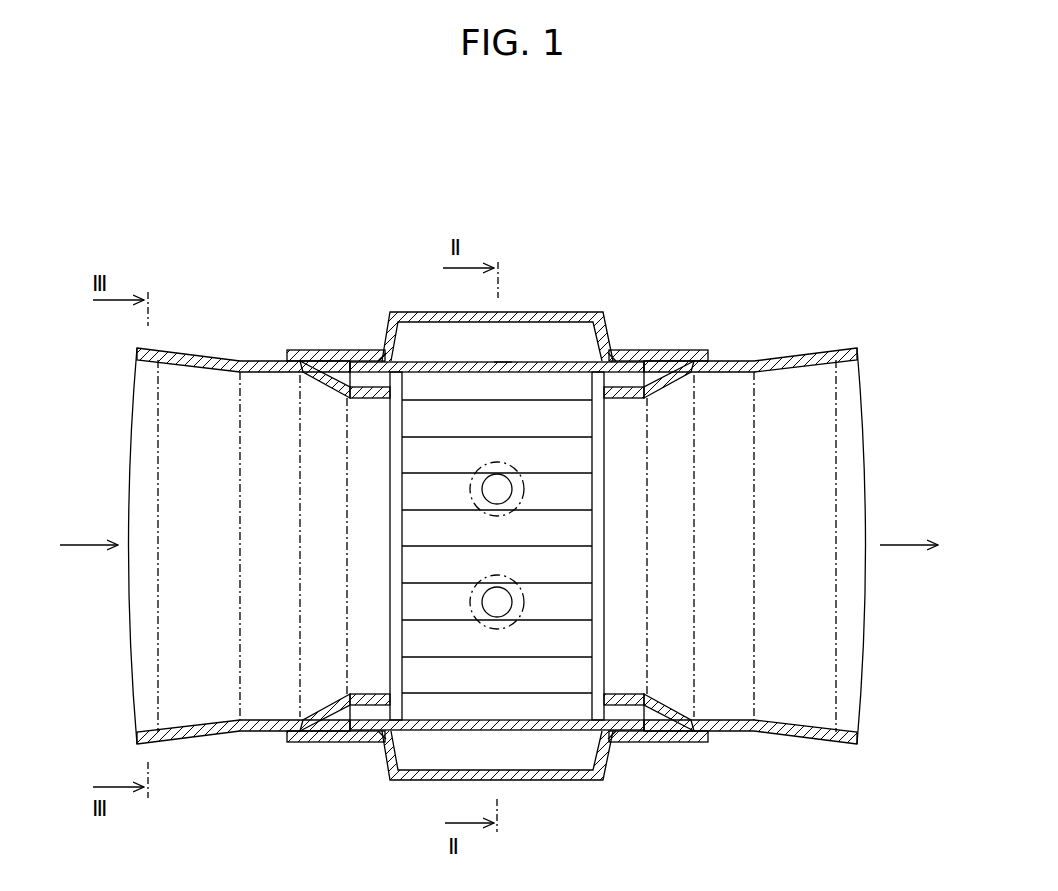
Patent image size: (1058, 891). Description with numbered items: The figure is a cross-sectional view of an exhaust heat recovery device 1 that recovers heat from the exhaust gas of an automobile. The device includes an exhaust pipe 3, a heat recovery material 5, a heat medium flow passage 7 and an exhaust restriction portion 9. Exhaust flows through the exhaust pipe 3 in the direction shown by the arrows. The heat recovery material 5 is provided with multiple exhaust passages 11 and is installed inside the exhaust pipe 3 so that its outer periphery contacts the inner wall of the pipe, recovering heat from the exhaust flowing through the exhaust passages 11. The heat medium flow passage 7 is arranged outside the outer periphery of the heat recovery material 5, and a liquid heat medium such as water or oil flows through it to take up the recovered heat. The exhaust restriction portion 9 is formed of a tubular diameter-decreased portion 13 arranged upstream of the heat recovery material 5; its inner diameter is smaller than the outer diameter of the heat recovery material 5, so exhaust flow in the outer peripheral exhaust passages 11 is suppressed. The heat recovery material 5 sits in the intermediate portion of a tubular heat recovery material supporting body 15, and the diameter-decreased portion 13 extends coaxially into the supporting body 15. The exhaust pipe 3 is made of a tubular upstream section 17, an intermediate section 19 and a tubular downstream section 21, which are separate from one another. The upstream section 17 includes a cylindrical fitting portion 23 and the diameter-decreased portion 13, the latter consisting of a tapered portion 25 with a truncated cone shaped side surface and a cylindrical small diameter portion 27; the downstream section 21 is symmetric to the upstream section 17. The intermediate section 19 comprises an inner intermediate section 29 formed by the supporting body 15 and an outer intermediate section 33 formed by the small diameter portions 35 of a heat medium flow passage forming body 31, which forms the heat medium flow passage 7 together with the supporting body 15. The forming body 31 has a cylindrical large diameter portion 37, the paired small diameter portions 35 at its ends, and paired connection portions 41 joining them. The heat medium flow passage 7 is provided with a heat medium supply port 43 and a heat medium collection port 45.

The exhaust heat recovery device 1 is at (622, 281).
The exhaust pipe 3 is at (344, 348).
The heat recovery material 5 is at (565, 693).
The heat medium flow passage 7 is at (545, 338).
The exhaust restriction portion 9 is at (358, 642).
The exhaust passages 11 is at (572, 457).
The diameter-decreased portion 13 is at (697, 362).
The heat recovery material supporting body 15 is at (428, 362).
The upstream section 17 is at (193, 349).
The intermediate section 19 is at (503, 357).
The downstream section 21 is at (819, 347).
The fitting portion 23 is at (254, 734).
The tapered portion 25 is at (320, 742).
The small diameter portion 27 is at (360, 709).
The inner intermediate section 29 is at (497, 367).
The heat medium flow passage forming body 31 is at (520, 781).
The outer intermediate section 33 is at (312, 348).
The small diameter portions 35 is at (658, 355).
The large diameter portion 37 is at (532, 311).
The connection portions 41 is at (384, 351).
The heat medium supply port 43 is at (513, 487).
The heat medium collection port 45 is at (513, 600).